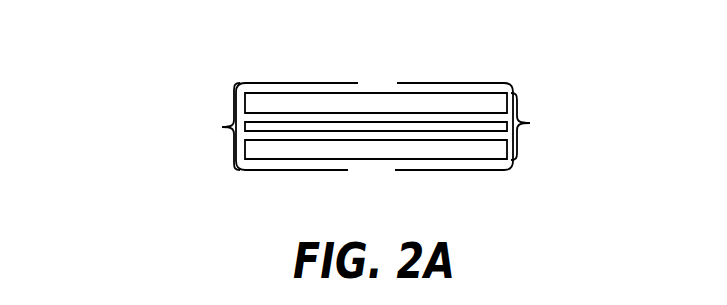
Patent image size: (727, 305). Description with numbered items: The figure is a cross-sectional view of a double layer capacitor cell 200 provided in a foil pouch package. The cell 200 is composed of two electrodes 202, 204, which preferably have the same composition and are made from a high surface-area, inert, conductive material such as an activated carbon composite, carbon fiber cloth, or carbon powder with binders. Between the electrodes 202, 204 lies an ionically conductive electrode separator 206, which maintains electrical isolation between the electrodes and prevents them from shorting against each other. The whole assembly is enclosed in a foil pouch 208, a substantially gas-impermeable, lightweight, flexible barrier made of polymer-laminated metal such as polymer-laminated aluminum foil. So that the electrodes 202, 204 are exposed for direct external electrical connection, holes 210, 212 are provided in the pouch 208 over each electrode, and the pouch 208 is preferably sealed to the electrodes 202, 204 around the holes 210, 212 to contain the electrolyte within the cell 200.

The cell 200 is at (174, 96).
The electrode 202 is at (497, 104).
The electrode 204 is at (497, 150).
The ionically conductive electrode separator 206 is at (497, 129).
The foil pouch 208 is at (277, 83).
The hole 210 is at (374, 82).
The hole 212 is at (370, 170).